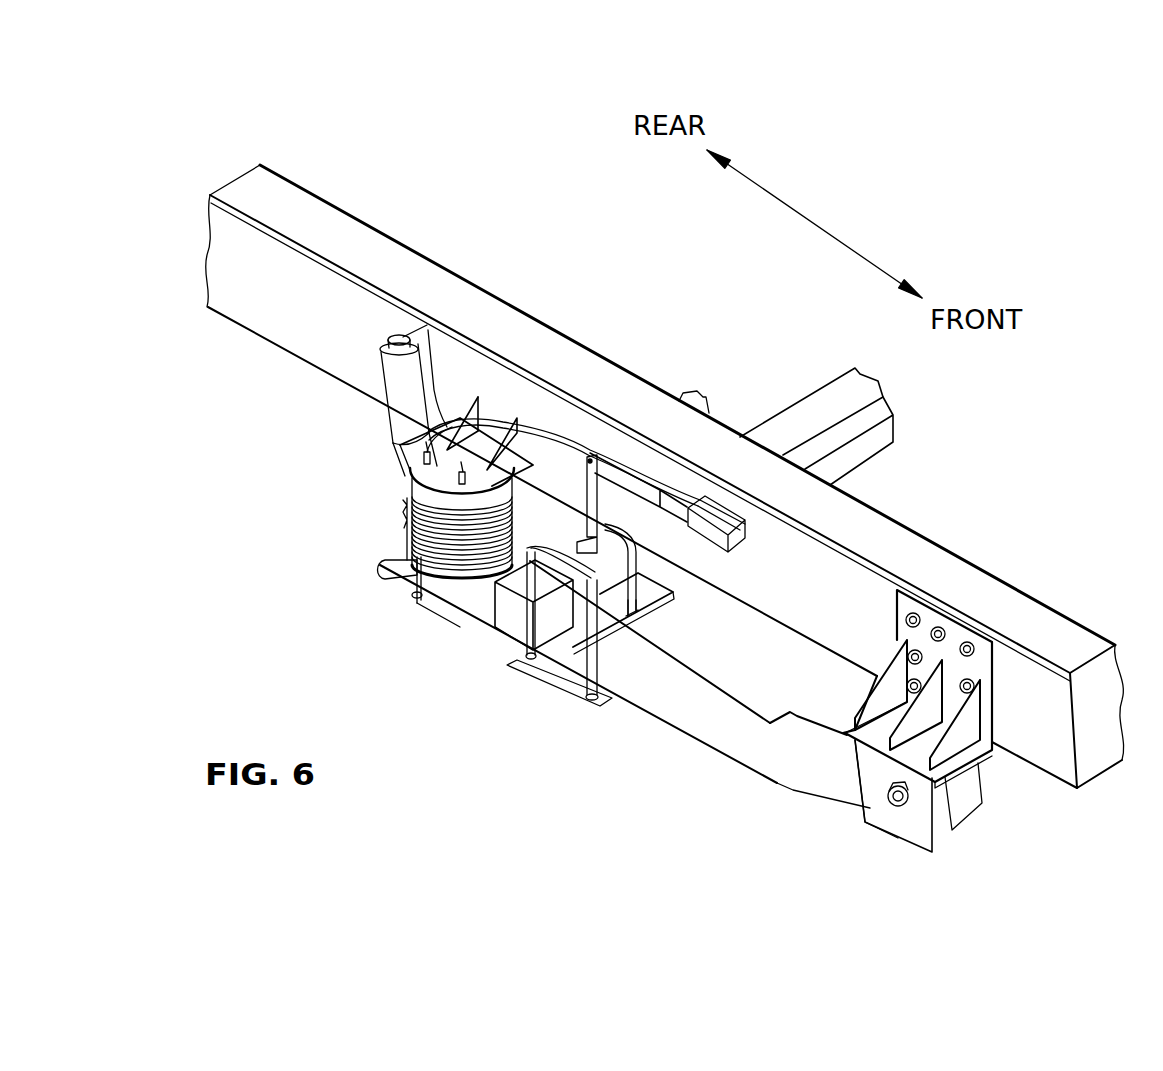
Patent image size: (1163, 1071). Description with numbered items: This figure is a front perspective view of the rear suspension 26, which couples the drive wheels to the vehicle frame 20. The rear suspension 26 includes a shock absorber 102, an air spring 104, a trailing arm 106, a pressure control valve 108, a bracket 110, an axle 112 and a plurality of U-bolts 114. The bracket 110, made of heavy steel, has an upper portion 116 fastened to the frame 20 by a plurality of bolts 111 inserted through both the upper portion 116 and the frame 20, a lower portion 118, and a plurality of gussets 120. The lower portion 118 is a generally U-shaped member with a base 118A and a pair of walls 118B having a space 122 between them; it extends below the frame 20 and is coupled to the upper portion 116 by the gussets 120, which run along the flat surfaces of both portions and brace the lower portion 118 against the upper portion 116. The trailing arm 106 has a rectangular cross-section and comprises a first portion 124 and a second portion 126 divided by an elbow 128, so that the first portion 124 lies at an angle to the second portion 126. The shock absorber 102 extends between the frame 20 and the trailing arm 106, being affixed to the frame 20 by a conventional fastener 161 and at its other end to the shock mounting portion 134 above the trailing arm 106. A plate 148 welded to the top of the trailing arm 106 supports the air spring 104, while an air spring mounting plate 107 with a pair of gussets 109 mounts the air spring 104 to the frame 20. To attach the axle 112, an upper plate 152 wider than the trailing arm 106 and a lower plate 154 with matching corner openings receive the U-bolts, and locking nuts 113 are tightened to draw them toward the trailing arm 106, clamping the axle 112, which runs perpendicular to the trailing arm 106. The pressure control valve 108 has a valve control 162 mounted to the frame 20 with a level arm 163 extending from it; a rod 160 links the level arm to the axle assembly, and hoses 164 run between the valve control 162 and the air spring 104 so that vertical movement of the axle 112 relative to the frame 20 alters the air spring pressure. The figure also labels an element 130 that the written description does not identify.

The frame 20 is at (400, 265).
The rear suspension 26 is at (272, 622).
The shock absorber 102 is at (403, 422).
The air spring 104 is at (400, 580).
The trailing arm 106 is at (678, 705).
The air spring mounting plate 107 is at (432, 477).
The pressure control valve 108 is at (745, 522).
The gussets 109 is at (533, 428).
The bracket 110 is at (960, 640).
The bolts 111 is at (915, 618).
The axle 112 is at (510, 666).
The locking nuts 113 is at (598, 706).
The U-bolts 114 is at (667, 592).
The upper portion 116 is at (698, 568).
The lower portion 118 is at (918, 828).
The base 118A is at (873, 741).
The walls 118B is at (975, 791).
The gussets 120 is at (978, 732).
The space 122 is at (960, 829).
The first portion 124 is at (830, 770).
The second portion 126 is at (460, 618).
The elbow 128 is at (790, 725).
The pivot bolt 130 is at (898, 806).
The shock mounting portion 134 is at (407, 515).
The plate 148 is at (503, 588).
The upper plate 152 is at (620, 612).
The lower plate 154 is at (572, 692).
The rod 160 is at (627, 523).
The fastener 161 is at (428, 330).
The valve control 162 is at (722, 512).
The level arm 163 is at (692, 400).
The hoses 164 is at (496, 423).